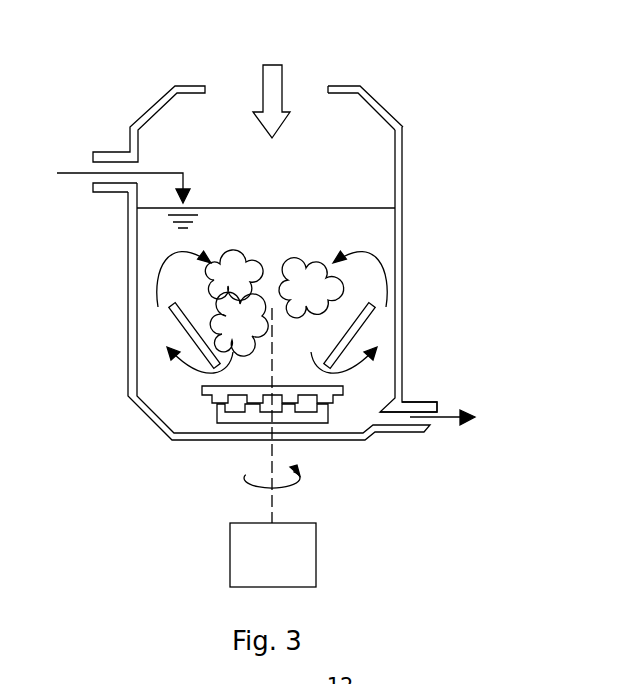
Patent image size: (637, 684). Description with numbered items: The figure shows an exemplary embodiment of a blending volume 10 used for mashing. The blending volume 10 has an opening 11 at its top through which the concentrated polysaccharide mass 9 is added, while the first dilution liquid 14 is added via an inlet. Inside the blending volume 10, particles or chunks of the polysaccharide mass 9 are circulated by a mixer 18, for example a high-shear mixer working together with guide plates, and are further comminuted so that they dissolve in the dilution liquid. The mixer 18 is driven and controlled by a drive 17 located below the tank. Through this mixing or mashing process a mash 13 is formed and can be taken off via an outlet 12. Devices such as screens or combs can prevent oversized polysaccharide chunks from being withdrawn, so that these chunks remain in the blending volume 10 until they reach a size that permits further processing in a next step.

The concentrated polysaccharide mass 9 is at (271, 85).
The blending volume 10 is at (397, 190).
The opening 11 is at (300, 110).
The outlet 12 is at (405, 402).
The mash 13 is at (283, 242).
The first dilution liquid 14 is at (117, 180).
The drive 17 is at (305, 550).
The mixer 18 is at (243, 418).